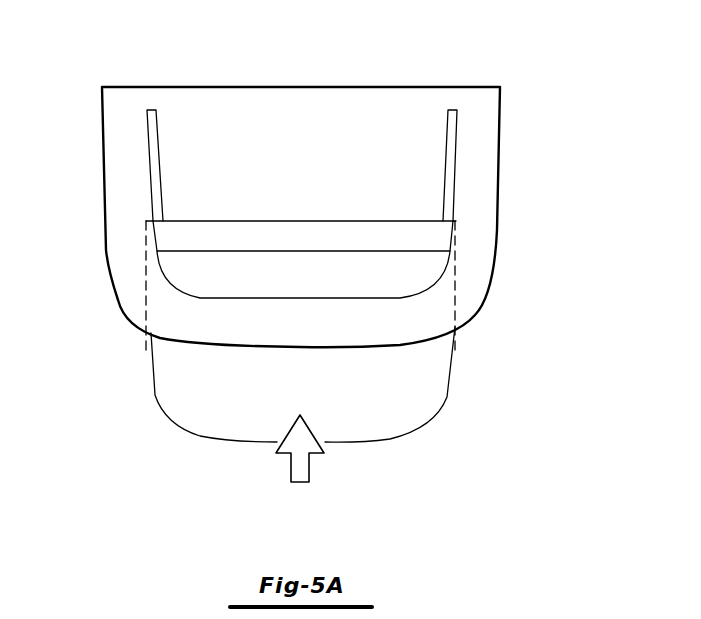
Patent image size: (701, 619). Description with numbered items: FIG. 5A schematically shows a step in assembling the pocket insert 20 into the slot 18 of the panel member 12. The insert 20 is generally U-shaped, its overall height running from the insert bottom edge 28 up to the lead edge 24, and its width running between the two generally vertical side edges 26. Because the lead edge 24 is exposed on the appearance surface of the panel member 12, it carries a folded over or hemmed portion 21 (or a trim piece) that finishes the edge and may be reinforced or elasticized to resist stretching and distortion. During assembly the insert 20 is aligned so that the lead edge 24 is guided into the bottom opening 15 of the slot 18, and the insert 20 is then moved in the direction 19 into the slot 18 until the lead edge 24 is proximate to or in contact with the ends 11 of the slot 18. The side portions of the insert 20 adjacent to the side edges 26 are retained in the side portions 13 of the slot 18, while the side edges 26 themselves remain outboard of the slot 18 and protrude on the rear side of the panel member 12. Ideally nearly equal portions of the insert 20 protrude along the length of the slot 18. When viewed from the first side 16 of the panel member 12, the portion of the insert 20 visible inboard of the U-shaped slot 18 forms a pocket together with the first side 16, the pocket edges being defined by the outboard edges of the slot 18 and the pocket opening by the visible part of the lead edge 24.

The panel member 12 is at (501, 266).
The first side 16 is at (342, 102).
The slot 18 is at (452, 196).
The ends 11 is at (155, 106).
The side portions 13 is at (151, 163).
The lead edge 24 is at (268, 222).
The hem portion 21 is at (320, 245).
The bottom opening 15 is at (303, 300).
The direction 19 is at (268, 102).
The insert 20 is at (132, 374).
The side edges 26 is at (447, 382).
The bottom edge 28 is at (387, 438).